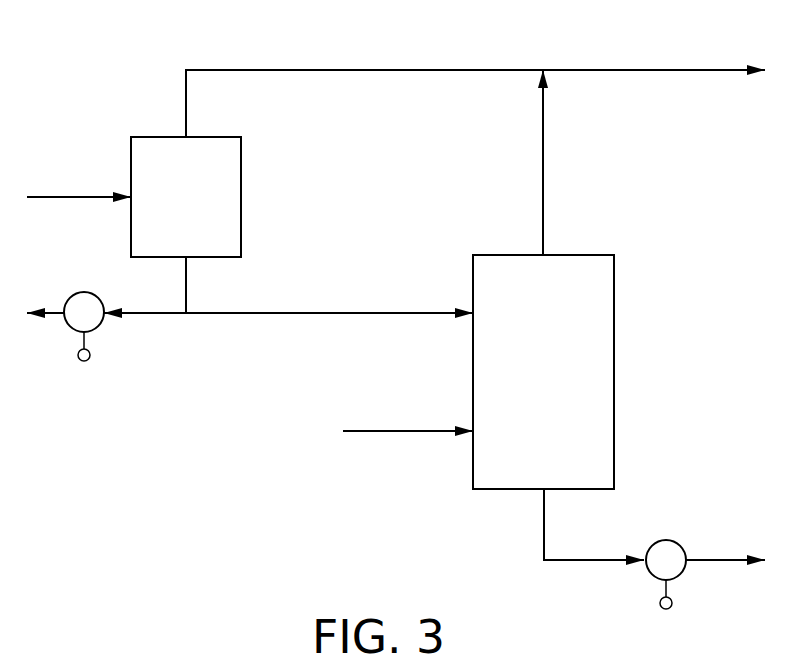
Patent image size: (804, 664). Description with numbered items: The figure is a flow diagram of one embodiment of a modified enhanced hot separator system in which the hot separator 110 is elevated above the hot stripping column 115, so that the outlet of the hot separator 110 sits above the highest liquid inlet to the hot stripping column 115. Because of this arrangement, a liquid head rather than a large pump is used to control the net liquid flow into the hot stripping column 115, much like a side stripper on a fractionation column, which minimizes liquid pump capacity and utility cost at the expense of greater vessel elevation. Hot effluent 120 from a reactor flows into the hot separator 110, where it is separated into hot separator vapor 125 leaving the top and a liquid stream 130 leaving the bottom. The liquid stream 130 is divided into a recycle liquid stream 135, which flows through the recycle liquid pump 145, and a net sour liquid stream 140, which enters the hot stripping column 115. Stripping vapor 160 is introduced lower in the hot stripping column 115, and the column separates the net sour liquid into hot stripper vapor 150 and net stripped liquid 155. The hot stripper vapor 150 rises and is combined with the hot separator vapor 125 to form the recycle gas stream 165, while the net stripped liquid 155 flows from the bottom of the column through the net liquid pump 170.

The hot separator 110 is at (243, 197).
The hot stripping column 115 is at (616, 290).
The hot effluent 120 is at (79, 192).
The hot separator vapor 125 is at (355, 68).
The liquid stream 130 is at (188, 283).
The recycle liquid stream 135 is at (160, 316).
The net sour liquid stream 140 is at (382, 310).
The recycle liquid pump 145 is at (78, 292).
The hot stripper vapor 150 is at (545, 160).
The net stripped liquid 155 is at (595, 558).
The stripping vapor 160 is at (382, 430).
The recycle gas stream 165 is at (648, 68).
The net liquid pump 170 is at (668, 540).